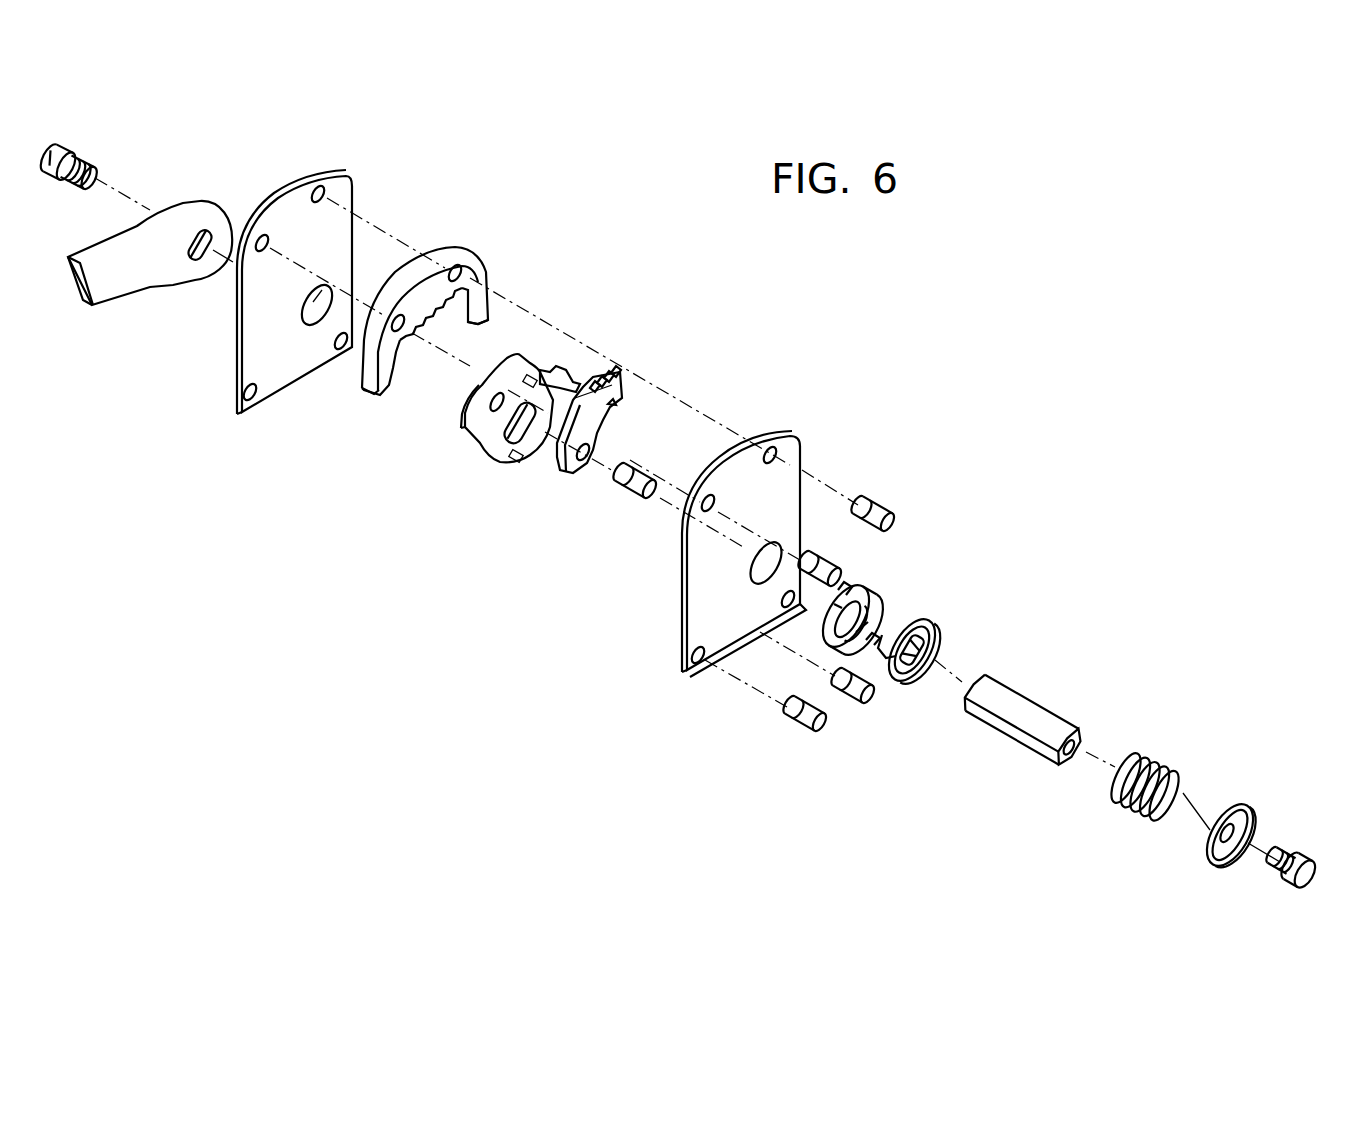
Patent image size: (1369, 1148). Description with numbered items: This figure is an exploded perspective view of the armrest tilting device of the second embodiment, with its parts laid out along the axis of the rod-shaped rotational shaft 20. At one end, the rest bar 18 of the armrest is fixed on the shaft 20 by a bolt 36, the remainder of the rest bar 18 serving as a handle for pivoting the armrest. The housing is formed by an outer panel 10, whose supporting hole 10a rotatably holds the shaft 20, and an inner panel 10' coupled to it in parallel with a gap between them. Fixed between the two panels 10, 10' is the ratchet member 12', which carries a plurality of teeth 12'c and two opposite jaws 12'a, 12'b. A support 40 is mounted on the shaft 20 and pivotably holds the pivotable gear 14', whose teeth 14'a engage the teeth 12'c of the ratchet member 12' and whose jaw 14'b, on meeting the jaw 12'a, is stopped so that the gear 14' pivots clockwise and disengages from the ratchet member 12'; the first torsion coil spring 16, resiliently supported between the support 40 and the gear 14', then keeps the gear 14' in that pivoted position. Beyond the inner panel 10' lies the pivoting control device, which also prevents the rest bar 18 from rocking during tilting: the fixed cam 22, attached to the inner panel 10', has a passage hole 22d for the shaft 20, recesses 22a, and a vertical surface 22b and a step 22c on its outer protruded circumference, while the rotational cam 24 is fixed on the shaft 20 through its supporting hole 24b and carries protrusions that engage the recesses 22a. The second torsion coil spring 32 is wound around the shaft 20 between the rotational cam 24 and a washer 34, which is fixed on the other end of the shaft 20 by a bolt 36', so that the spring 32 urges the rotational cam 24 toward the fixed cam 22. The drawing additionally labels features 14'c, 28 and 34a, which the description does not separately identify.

The bolt 36 is at (89, 162).
The rest bar 18 is at (198, 217).
The outer panel 10 is at (343, 279).
The supporting hole 10a is at (318, 315).
The ratchet member 12' is at (466, 301).
The jaw 12'a is at (352, 441).
The jaw 12'b is at (541, 313).
The teeth 12'c is at (421, 434).
The support 40 is at (487, 453).
The first torsion coil spring 16 is at (592, 380).
The pivotable gear 14' is at (639, 422).
The teeth 14'a is at (651, 333).
The jaw 14'b is at (552, 516).
The latch teeth 14'c is at (692, 356).
The inner panel 10' is at (779, 545).
The pins 28 is at (865, 706).
The fixed cam 22 is at (897, 594).
The recesses 22a is at (872, 585).
The vertical surface 22b is at (868, 626).
The step 22c is at (884, 620).
The passage hole 22d is at (846, 607).
The rotational cam 24 is at (928, 630).
The supporting hole 24b is at (910, 672).
The rotational shaft 20 is at (1037, 707).
The second torsion coil spring 32 is at (1157, 770).
The washer 34 is at (1237, 813).
The washer hole 34a is at (1213, 857).
The bolt 36' is at (1313, 832).